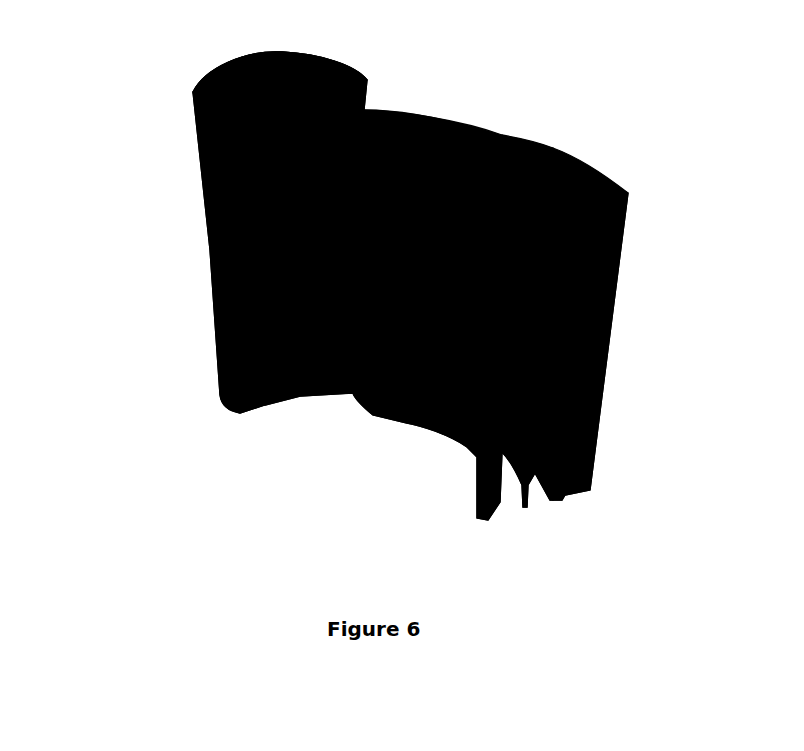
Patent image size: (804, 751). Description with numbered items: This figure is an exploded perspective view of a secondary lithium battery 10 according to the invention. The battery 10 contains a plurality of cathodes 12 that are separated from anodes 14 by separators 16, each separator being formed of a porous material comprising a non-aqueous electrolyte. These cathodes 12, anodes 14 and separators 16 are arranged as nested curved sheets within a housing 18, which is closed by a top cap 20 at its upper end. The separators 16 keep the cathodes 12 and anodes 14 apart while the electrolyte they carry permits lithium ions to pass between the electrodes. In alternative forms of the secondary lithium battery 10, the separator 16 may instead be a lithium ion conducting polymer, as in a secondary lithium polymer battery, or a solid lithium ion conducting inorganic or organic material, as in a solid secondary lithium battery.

The secondary lithium battery 10 is at (222, 452).
The cathodes 12 is at (482, 475).
The anodes 14 is at (570, 327).
The separators 16 is at (560, 402).
The housing 18 is at (212, 280).
The top cap 20 is at (320, 58).